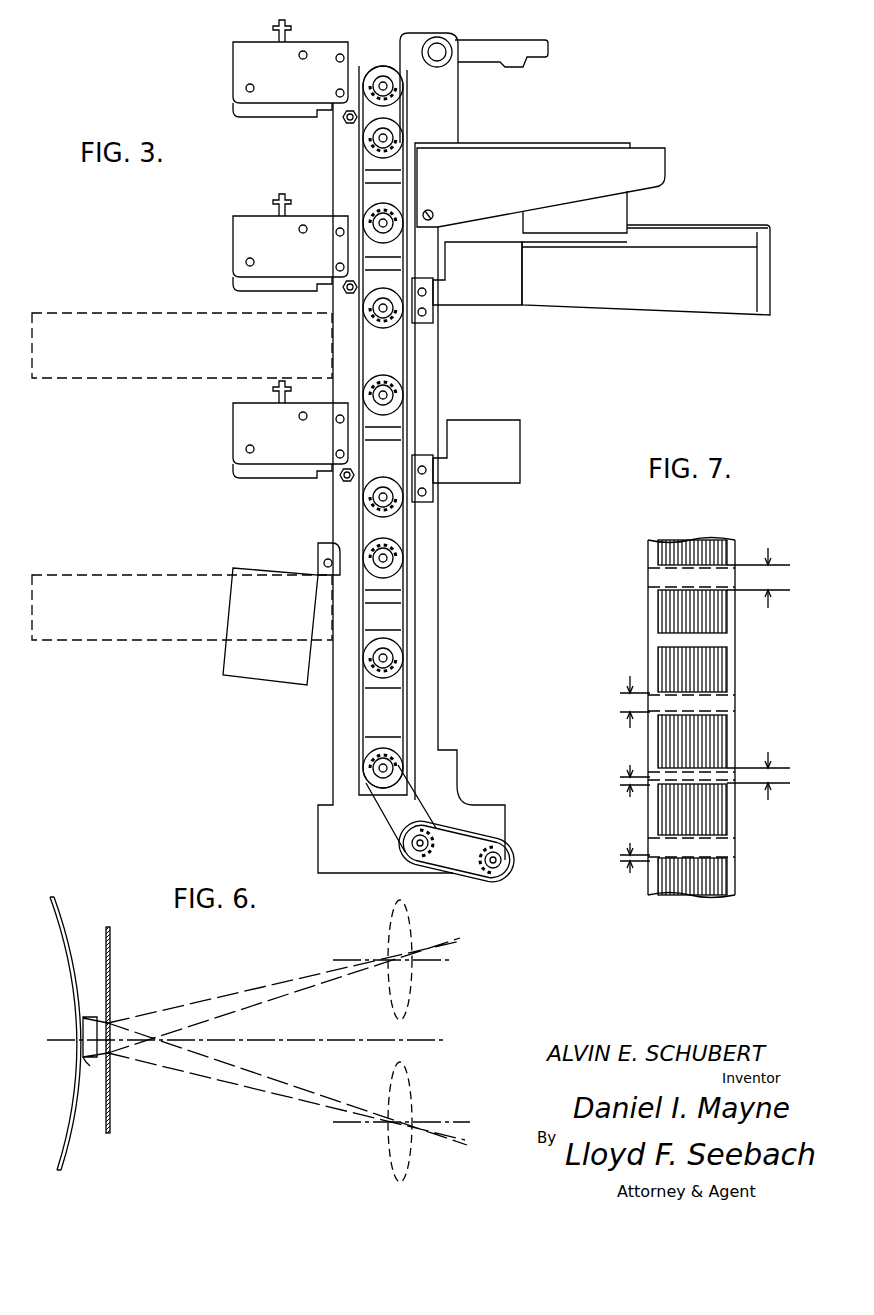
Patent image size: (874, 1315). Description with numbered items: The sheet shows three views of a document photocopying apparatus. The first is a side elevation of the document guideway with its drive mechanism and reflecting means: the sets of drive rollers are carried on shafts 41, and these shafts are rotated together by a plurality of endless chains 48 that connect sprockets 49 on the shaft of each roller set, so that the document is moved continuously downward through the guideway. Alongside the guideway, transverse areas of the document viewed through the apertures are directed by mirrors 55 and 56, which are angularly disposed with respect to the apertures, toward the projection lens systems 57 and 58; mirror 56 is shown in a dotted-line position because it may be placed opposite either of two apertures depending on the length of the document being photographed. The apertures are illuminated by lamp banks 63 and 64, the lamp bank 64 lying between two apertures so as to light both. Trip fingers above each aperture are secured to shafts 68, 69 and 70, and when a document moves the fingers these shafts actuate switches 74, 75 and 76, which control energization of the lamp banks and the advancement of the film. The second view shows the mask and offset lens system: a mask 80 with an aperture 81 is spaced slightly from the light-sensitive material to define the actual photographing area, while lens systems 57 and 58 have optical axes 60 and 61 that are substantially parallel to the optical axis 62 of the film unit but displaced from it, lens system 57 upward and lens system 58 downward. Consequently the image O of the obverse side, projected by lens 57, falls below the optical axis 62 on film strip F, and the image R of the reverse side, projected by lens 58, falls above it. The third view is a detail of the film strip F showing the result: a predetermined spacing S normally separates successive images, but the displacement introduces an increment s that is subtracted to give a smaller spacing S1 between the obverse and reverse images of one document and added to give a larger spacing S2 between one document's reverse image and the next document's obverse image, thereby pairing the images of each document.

In FIG. 3, the shaft 41 is at (390, 86).
In FIG. 3, the endless chain 48 is at (363, 162).
In FIG. 3, the sprocket 49 is at (372, 383).
In FIG. 3, the mirror 55 is at (688, 226).
In FIG. 3, the mirror 56 is at (172, 382).
In FIG. 6, the projection lens system 57 is at (407, 927).
In FIG. 6, the projection lens system 58 is at (412, 1093).
In FIG. 6, the optical axis 60 is at (347, 960).
In FIG. 6, the optical axis 61 is at (340, 1123).
In FIG. 6, the optical axis of the film unit 62 is at (427, 1040).
In FIG. 3, the lamp bank 63 is at (618, 205).
In FIG. 3, the lamp bank 64 is at (233, 657).
In FIG. 3, the shaft 68 is at (344, 121).
In FIG. 3, the shaft 69 is at (344, 291).
In FIG. 3, the shaft 70 is at (343, 480).
In FIG. 3, the switch 74 is at (260, 110).
In FIG. 3, the switch 75 is at (245, 285).
In FIG. 3, the switch 76 is at (250, 472).
In FIG. 6, the mask 80 is at (112, 980).
In FIG. 6, the aperture 81 is at (112, 1053).
In FIG. 7, the film strip F is at (650, 608).
In FIG. 6, the film strip F is at (66, 948).
In FIG. 6, the image of the reverse side R is at (90, 1016).
In FIG. 6, the image of the obverse side O is at (91, 1076).
In FIG. 7, the predetermined spacing S is at (627, 701).
In FIG. 7, the spacing S1 is at (770, 776).
In FIG. 7, the spacing S2 is at (758, 578).
In FIG. 7, the increment of spacing s is at (627, 780).